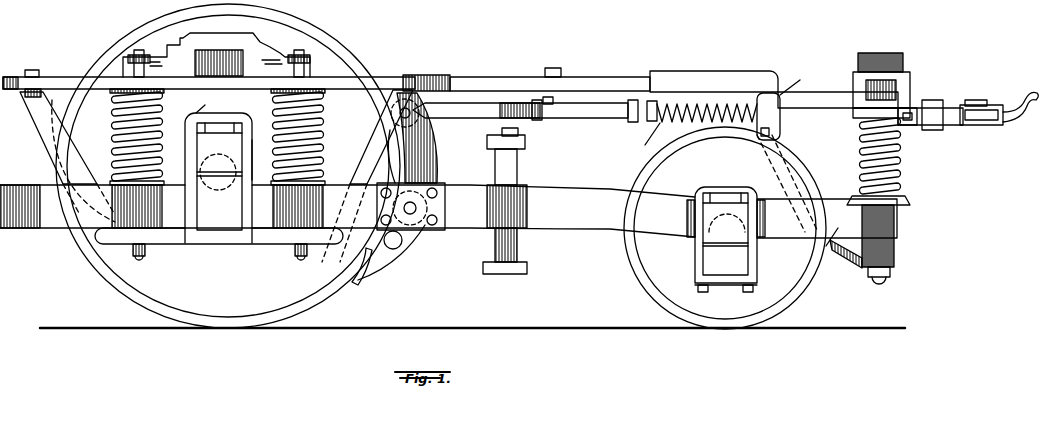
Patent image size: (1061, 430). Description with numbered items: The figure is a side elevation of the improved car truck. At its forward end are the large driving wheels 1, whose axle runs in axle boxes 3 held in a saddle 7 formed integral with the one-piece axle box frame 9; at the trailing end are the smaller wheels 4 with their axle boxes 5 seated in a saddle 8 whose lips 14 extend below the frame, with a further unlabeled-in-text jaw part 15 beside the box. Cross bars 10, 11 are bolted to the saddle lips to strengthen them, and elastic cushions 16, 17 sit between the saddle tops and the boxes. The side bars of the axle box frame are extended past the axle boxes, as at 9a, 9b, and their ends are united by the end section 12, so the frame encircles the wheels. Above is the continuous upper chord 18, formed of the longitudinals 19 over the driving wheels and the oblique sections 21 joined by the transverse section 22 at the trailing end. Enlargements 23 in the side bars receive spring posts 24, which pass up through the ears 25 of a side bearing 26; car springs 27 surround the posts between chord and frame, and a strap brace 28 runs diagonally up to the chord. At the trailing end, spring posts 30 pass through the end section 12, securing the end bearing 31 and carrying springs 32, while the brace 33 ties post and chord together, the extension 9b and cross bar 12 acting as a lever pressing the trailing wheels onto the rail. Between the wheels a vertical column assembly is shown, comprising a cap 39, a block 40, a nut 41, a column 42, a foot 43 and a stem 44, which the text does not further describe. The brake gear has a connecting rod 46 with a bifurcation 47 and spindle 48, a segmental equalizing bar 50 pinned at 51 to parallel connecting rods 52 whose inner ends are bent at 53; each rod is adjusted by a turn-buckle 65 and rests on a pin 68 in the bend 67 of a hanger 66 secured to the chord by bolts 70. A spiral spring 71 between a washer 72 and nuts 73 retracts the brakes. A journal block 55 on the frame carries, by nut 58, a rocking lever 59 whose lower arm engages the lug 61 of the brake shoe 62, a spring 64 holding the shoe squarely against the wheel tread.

The driving wheels 1 is at (232, 305).
The axle boxes 3 is at (198, 149).
The trailing wheels 4 is at (725, 228).
The axle boxes 5 is at (726, 235).
The saddle 7 is at (258, 158).
The saddle 8 is at (745, 193).
The axle box frame 9 is at (448, 211).
The side bar extension 9a is at (89, 200).
The side bar extension 9b is at (835, 247).
The cross bar 10 is at (734, 292).
The cross bar 11 is at (205, 244).
The end section 12 is at (891, 236).
The lips 14 is at (760, 270).
The pedestal jaw 15 is at (695, 268).
The elastic cushion 16 is at (722, 193).
The elastic cushion 17 is at (232, 117).
The longitudinals 19 is at (197, 102).
The upper chord 18 is at (229, 75).
The oblique sections 21 is at (605, 80).
The transverse section 22 is at (905, 85).
The enlargements 23 is at (150, 213).
The spring posts 24 is at (112, 144).
The ears 25 is at (219, 64).
The side bearing 26 is at (216, 55).
The car springs 27 is at (112, 117).
The strap brace 28 is at (45, 153).
The spring posts 30 is at (862, 157).
The end bearing 31 is at (895, 60).
The springs 32 is at (902, 162).
The brace 33 is at (848, 272).
The cap 39 is at (525, 142).
The block 40 is at (530, 210).
The nut 41 is at (525, 129).
The column 42 is at (526, 167).
The foot 43 is at (497, 277).
The stem 44 is at (520, 250).
The connecting rod 46 is at (1020, 110).
The bifurcation 47 is at (981, 124).
The spindle 48 is at (981, 94).
The equalizing bar 50 is at (932, 124).
The pin 51 is at (943, 106).
The connecting rods 52 is at (515, 100).
The bent end 53 is at (415, 113).
The journal block 55 is at (418, 203).
The nut 58 is at (415, 207).
The rocking lever 59 is at (430, 158).
The lug 61 is at (392, 270).
The brake shoe 62 is at (362, 278).
The spring 64 is at (391, 252).
The turn-buckle 65 is at (520, 120).
The hanger 66 is at (725, 76).
The bend 67 is at (800, 79).
The pin 68 is at (770, 132).
The bolts 70 is at (564, 63).
The spiral spring 71 is at (648, 141).
The washer 72 is at (768, 107).
The nuts 73 is at (649, 119).